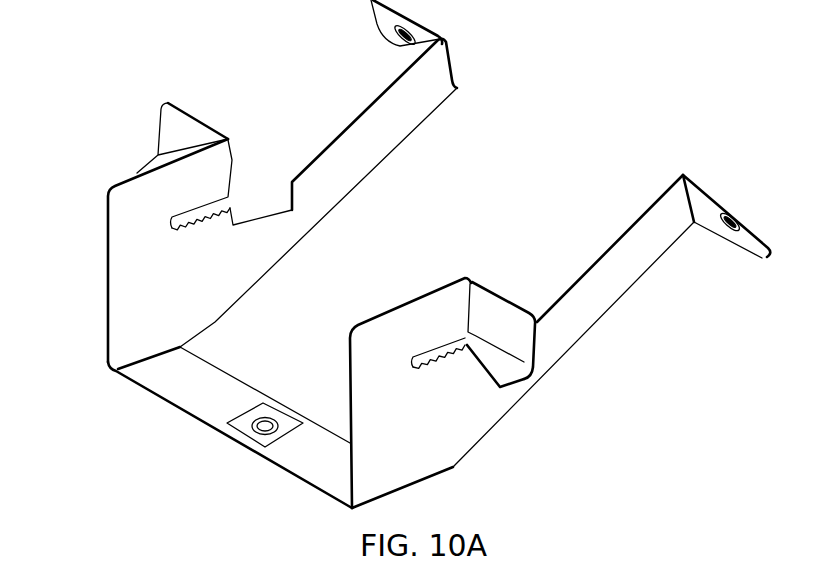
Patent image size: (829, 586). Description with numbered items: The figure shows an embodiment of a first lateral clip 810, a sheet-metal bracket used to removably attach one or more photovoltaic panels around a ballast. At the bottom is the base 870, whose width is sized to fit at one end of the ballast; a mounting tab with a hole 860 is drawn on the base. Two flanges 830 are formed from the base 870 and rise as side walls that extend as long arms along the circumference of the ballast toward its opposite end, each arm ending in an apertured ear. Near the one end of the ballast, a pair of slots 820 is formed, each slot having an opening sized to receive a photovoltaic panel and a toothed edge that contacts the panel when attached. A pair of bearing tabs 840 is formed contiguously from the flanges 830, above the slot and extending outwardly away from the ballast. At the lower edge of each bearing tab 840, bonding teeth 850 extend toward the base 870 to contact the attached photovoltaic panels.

The bracket 810 is at (95, 443).
The slots 820 is at (231, 201).
The flanges 830 is at (407, 118).
The bearing tabs 840 is at (495, 306).
The bonding teeth 850 is at (480, 377).
The mounting tab with hole 860 is at (246, 438).
The base 870 is at (182, 388).